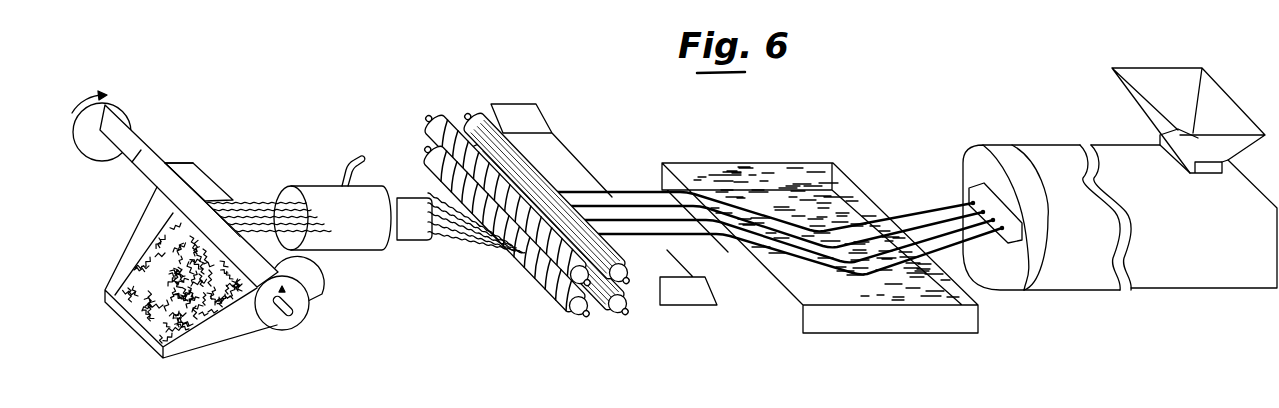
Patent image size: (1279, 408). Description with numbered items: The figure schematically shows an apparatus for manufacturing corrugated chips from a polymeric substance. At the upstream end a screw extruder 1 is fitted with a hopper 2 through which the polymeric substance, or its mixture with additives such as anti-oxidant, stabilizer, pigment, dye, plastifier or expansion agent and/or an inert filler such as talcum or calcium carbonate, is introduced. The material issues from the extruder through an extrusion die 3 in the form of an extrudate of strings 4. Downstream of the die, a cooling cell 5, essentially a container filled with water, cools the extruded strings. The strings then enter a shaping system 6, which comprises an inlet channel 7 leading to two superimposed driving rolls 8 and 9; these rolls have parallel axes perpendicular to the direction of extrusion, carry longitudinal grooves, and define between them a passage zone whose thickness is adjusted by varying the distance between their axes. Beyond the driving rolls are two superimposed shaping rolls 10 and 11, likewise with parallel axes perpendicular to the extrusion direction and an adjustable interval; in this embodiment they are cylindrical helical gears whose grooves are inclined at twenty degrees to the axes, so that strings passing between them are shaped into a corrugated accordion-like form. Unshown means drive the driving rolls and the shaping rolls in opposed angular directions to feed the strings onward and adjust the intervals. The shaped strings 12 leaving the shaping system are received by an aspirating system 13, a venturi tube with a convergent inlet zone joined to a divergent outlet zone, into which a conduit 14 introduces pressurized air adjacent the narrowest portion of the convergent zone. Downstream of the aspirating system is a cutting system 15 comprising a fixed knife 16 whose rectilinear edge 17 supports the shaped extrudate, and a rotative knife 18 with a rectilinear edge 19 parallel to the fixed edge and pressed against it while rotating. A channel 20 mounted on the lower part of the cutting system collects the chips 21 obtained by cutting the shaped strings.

The screw extruder 1 is at (1227, 277).
The hopper 2 is at (1222, 102).
The extrusion die 3 is at (962, 193).
The extrudate strings 4 is at (923, 217).
The cooling cell 5 is at (773, 170).
The shaping system 6 is at (535, 223).
The inlet channel 7 is at (555, 152).
The driving roll 8 is at (638, 278).
The driving roll 9 is at (622, 320).
The shaping roll 10 is at (547, 280).
The shaping roll 11 is at (568, 315).
The shaped strings 12 is at (463, 243).
The aspirating system 13 is at (367, 237).
The conduit 14 is at (348, 158).
The cutting system 15 is at (297, 257).
The fixed knife 16 is at (210, 180).
The rectilinear edge 17 is at (180, 170).
The rotative knife 18 is at (170, 188).
The rectilinear edge 19 is at (127, 162).
The channel 20 is at (213, 328).
The chips 21 is at (145, 313).